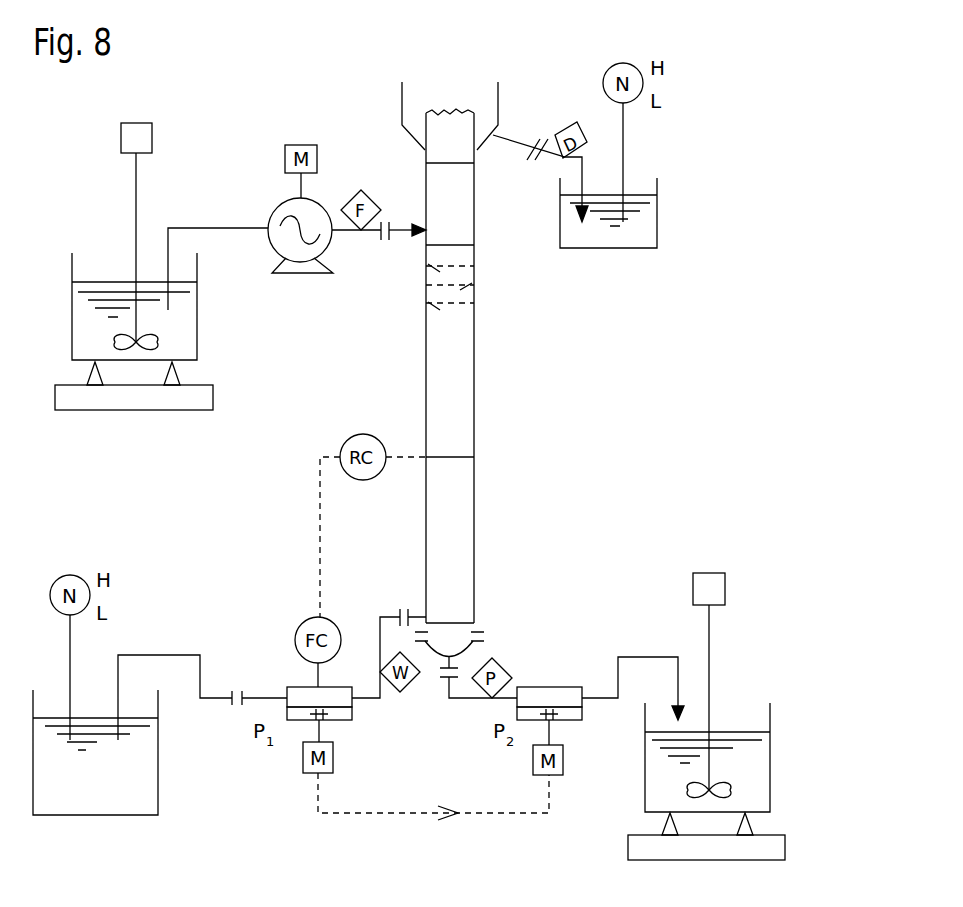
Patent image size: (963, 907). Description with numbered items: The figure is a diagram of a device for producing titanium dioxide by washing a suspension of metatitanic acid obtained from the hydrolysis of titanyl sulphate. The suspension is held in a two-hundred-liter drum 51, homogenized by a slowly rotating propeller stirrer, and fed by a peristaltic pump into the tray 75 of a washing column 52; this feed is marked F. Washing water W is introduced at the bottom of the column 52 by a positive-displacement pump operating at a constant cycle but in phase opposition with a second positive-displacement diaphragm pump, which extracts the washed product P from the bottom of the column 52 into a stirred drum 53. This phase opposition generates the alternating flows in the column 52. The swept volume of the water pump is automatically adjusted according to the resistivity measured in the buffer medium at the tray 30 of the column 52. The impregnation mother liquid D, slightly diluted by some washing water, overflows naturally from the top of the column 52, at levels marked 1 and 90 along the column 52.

The column bottom level 1 is at (463, 622).
The tray 30 is at (466, 459).
The tray 75 is at (466, 247).
The column level 90 is at (466, 165).
The drum 51 is at (197, 312).
The washing column 52 is at (425, 339).
The drum 53 is at (645, 767).